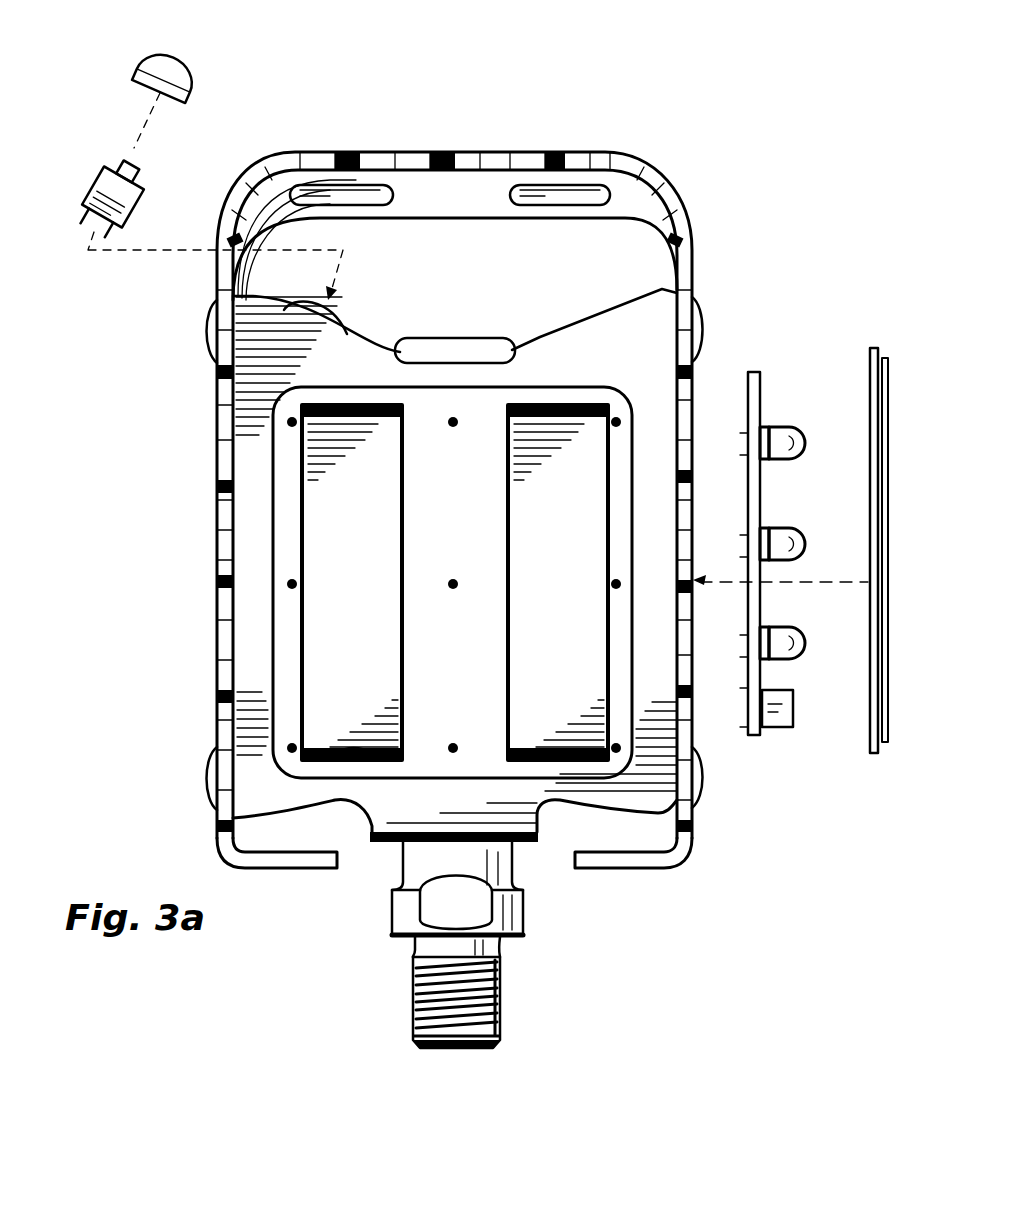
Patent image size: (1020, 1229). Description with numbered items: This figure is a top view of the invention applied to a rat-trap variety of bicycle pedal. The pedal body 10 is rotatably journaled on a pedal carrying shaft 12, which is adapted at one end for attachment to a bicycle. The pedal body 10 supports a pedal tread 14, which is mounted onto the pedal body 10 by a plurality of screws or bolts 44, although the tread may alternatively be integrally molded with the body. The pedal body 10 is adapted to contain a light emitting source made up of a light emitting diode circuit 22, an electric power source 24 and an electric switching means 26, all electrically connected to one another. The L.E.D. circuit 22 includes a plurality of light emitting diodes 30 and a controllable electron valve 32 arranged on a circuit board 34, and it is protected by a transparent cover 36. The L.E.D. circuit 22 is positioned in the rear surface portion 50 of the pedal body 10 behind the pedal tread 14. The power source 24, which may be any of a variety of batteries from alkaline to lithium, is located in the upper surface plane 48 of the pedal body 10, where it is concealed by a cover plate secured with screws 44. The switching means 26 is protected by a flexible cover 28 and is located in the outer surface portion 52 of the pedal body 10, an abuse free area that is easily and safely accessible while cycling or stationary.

The pedal body 10 is at (257, 525).
The pedal carrying shaft 12 is at (455, 895).
The pedal tread 14 is at (448, 192).
The light emitting diode circuit 22 is at (764, 391).
The electric power source 24 is at (352, 515).
The electric switching means 26 is at (133, 183).
The flexible cover 28 is at (166, 57).
The light emitting diodes 30 is at (803, 550).
The controllable electron valve 32 is at (792, 712).
The circuit board 34 is at (762, 418).
The transparent cover 36 is at (213, 528).
The screws or bolts 44 is at (700, 325).
The upper surface plane 48 is at (253, 712).
The rear surface portion 50 is at (692, 287).
The outer surface portion 52 is at (560, 336).